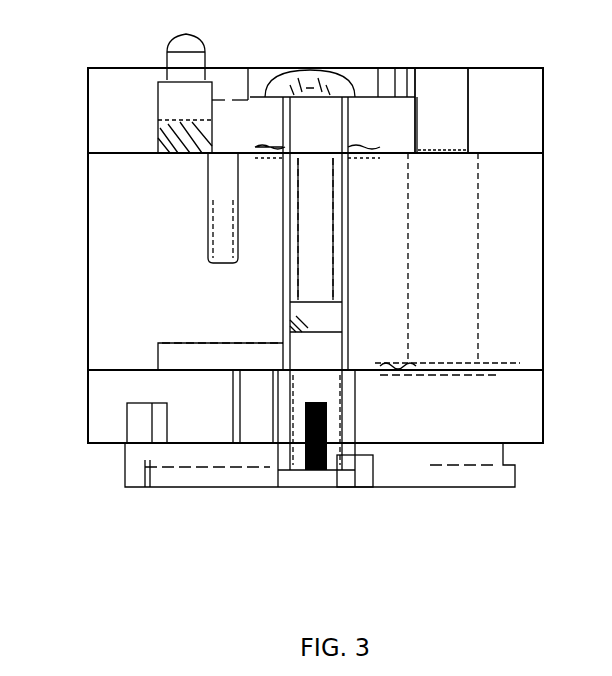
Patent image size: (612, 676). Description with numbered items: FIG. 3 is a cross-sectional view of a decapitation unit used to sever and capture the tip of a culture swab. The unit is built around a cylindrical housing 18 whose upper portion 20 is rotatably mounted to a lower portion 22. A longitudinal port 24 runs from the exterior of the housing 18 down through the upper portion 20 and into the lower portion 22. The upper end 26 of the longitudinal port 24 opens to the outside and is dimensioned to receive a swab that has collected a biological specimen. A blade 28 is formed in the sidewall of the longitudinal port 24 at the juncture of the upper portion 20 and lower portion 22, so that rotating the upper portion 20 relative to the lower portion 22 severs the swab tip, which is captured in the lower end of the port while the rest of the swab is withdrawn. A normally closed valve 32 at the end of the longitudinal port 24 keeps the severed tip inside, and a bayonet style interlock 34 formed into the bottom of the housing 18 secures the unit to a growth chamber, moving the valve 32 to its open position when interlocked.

The cylindrical housing 18 is at (88, 289).
The upper portion 20 is at (545, 118).
The lower portion 22 is at (548, 287).
The longitudinal port 24 is at (428, 42).
The upper end 26 is at (470, 105).
The blade 28 is at (406, 310).
The normally closed valve 32 is at (515, 367).
The bayonet style interlock 34 is at (515, 470).